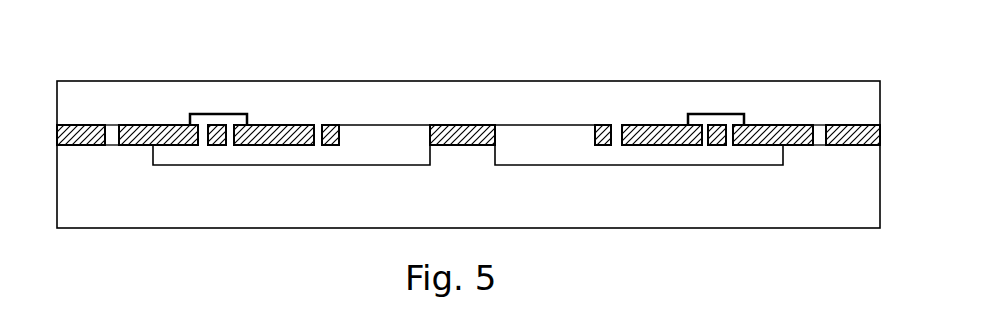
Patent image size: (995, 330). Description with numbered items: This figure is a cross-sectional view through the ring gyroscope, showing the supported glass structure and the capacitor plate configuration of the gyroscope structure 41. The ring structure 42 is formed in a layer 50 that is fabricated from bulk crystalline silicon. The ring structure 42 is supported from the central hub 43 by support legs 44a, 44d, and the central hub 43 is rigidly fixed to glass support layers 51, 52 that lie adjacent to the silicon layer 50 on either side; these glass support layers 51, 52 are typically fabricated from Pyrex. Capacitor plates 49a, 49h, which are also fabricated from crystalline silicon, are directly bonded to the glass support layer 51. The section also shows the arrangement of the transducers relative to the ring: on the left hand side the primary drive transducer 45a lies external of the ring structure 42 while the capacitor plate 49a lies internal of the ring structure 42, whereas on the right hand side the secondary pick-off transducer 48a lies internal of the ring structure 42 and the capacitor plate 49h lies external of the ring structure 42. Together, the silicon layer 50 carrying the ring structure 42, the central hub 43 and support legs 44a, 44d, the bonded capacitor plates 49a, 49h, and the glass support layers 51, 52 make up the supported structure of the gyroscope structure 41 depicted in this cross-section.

The gyroscope structure 41 is at (758, 59).
The ring structure 42 is at (220, 127).
The central hub 43 is at (470, 145).
The support leg 44a is at (330, 127).
The support leg 44d is at (600, 127).
The primary drive transducer 45a is at (153, 127).
The secondary pick-off transducer 48a is at (650, 127).
The capacitor plate 49a is at (276, 127).
The capacitor plate 49h is at (788, 127).
The layer 50 is at (847, 146).
The glass support layer 51 is at (408, 95).
The glass support layer 52 is at (810, 205).